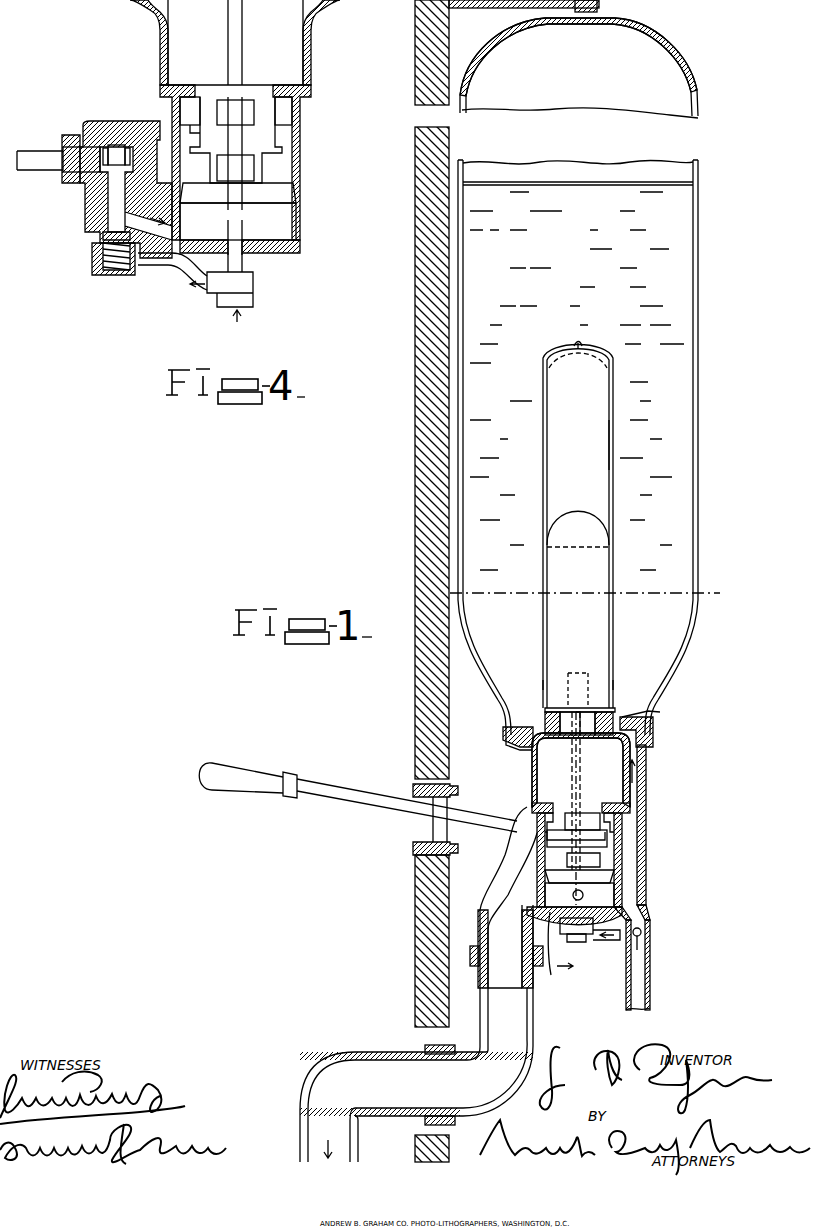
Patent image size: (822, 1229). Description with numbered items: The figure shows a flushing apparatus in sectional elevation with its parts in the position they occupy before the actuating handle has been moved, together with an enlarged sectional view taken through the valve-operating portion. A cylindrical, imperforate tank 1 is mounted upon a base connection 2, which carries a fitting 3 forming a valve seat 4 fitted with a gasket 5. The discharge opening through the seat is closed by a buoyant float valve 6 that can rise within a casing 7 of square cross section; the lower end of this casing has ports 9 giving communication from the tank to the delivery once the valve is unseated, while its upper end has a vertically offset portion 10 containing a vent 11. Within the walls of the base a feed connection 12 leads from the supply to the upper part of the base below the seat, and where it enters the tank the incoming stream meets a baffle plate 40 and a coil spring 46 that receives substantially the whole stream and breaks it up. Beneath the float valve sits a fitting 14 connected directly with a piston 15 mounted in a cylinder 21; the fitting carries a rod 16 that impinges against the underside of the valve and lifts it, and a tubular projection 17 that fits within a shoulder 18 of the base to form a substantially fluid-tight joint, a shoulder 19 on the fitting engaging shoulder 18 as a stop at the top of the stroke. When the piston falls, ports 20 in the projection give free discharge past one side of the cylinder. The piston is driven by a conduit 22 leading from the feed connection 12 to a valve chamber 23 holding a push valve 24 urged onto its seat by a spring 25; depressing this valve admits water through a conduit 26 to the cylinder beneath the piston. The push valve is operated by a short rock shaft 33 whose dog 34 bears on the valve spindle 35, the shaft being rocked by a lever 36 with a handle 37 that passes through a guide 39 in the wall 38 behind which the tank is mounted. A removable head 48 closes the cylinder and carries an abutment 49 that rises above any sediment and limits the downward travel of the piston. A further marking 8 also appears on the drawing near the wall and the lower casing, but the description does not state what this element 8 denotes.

In FIG. 1, the tank 1 is at (470, 490).
In FIG. 1, the base connection 2 is at (532, 766).
In FIG. 4, the base connection 2 is at (161, 44).
In FIG. 1, the fitting 3 is at (560, 730).
In FIG. 1, the valve seat 4 is at (584, 722).
In FIG. 1, the gasket 5 is at (609, 709).
In FIG. 1, the float valve 6 is at (578, 527).
In FIG. 1, the casing 7 is at (610, 448).
In FIG. 1, the section line 8 is at (409, 555).
In FIG. 1, the ports 9 is at (611, 686).
In FIG. 1, the vertically offset portion 10 is at (580, 344).
In FIG. 1, the vent 11 is at (577, 344).
In FIG. 1, the feed connection 12 is at (640, 824).
In FIG. 4, the feed connection 12 is at (215, 264).
In FIG. 1, the fitting 14 is at (577, 848).
In FIG. 4, the fitting 14 is at (236, 140).
In FIG. 1, the piston 15 is at (579, 895).
In FIG. 4, the piston 15 is at (275, 200).
In FIG. 1, the rod 16 is at (574, 768).
In FIG. 4, the rod 16 is at (232, 45).
In FIG. 1, the tubular projection 17 is at (560, 808).
In FIG. 4, the tubular projection 17 is at (204, 93).
In FIG. 1, the shoulder 18 is at (540, 808).
In FIG. 4, the shoulder 18 is at (183, 90).
In FIG. 1, the shoulder 19 is at (553, 835).
In FIG. 4, the shoulder 19 is at (191, 150).
In FIG. 1, the ports 20 is at (600, 820).
In FIG. 4, the ports 20 is at (250, 98).
In FIG. 1, the cylinder 21 is at (544, 872).
In FIG. 4, the cylinder 21 is at (238, 204).
In FIG. 1, the conduit 22 is at (608, 942).
In FIG. 4, the conduit 22 is at (168, 275).
In FIG. 4, the valve chamber 23 is at (100, 250).
In FIG. 4, the push valve 24 is at (100, 236).
In FIG. 4, the spring 25 is at (95, 268).
In FIG. 1, the conduit 26 is at (584, 895).
In FIG. 4, the conduit 26 is at (143, 215).
In FIG. 4, the rock shaft 33 is at (38, 156).
In FIG. 4, the dog 34 is at (116, 150).
In FIG. 4, the valve spindle 35 is at (110, 200).
In FIG. 1, the lever 36 is at (326, 785).
In FIG. 1, the handle 37 is at (246, 771).
In FIG. 1, the wall 38 is at (416, 553).
In FIG. 1, the guide 39 is at (416, 792).
In FIG. 1, the baffle plate 40 is at (655, 714).
In FIG. 1, the coil spring 46 is at (504, 730).
In FIG. 1, the removable head 48 is at (569, 957).
In FIG. 4, the removable head 48 is at (270, 256).
In FIG. 1, the abutment 49 is at (640, 912).